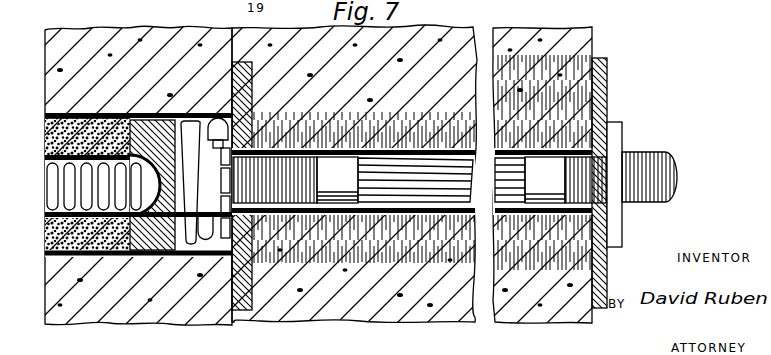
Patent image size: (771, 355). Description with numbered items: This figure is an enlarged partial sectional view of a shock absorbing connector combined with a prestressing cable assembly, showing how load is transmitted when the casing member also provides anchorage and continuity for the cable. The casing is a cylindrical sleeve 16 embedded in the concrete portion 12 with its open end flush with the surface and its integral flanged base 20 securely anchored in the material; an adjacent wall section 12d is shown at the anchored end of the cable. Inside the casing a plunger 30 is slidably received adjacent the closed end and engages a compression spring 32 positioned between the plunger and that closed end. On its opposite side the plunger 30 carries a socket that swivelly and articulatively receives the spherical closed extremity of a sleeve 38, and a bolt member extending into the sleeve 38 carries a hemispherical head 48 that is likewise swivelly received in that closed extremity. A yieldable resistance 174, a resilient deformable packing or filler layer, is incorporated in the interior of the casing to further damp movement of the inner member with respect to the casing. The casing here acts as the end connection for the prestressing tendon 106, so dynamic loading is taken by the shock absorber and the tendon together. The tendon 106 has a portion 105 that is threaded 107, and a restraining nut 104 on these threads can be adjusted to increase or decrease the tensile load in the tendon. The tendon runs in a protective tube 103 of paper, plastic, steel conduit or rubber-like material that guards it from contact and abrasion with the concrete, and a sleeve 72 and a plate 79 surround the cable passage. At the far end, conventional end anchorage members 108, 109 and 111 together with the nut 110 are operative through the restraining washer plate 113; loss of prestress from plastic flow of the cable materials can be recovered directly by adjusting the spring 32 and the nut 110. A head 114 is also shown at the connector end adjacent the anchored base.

The portion 12 is at (394, 311).
The wall section 12d is at (564, 175).
The cylindrical sleeve 16 is at (137, 257).
The flanged base 20 is at (233, 62).
The plunger 30 is at (168, 113).
The compression spring 32 is at (191, 96).
The sleeve 38 is at (119, 135).
The hemispherical head 48 is at (87, 234).
The sleeve 72 is at (452, 128).
The bearing plate 79 is at (593, 58).
The tube 103 is at (398, 128).
The restraining nut 104 is at (238, 150).
The portion 105 is at (418, 188).
The prestressing tendon 106 is at (405, 226).
The threads 107 is at (265, 214).
The end anchorage member 108 is at (554, 200).
The end anchorage member 109 is at (607, 100).
The nut 110 is at (616, 137).
The end anchorage member 111 is at (657, 153).
The restraining washer plate 113 is at (610, 218).
The head 114 is at (253, 241).
The yieldable resistance 174 is at (74, 95).